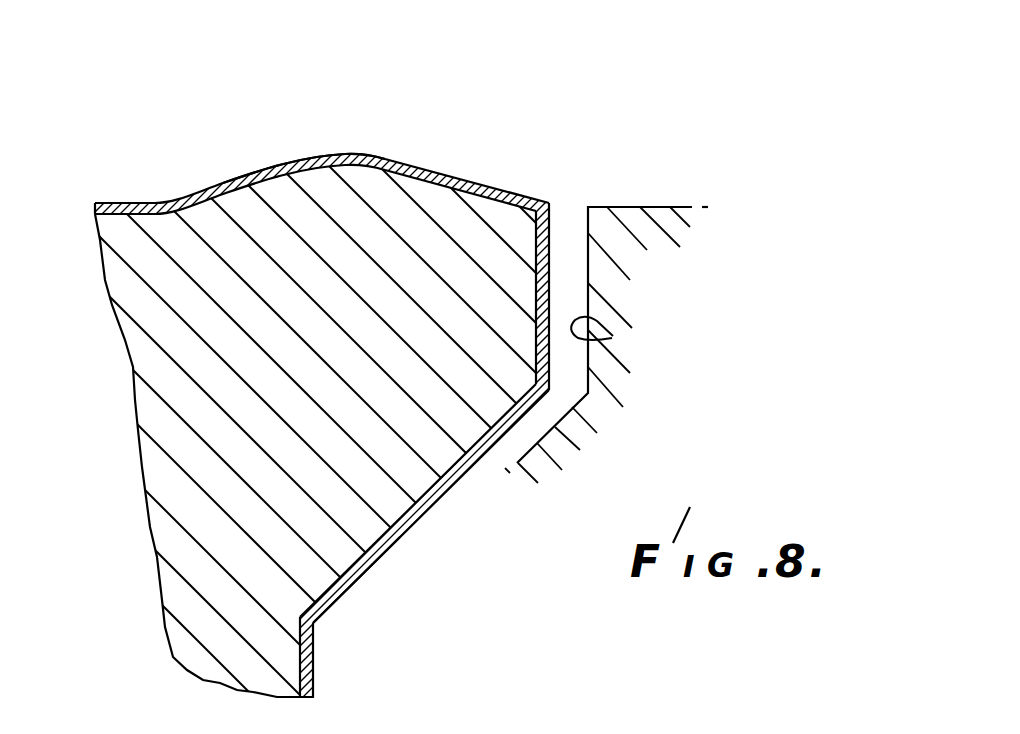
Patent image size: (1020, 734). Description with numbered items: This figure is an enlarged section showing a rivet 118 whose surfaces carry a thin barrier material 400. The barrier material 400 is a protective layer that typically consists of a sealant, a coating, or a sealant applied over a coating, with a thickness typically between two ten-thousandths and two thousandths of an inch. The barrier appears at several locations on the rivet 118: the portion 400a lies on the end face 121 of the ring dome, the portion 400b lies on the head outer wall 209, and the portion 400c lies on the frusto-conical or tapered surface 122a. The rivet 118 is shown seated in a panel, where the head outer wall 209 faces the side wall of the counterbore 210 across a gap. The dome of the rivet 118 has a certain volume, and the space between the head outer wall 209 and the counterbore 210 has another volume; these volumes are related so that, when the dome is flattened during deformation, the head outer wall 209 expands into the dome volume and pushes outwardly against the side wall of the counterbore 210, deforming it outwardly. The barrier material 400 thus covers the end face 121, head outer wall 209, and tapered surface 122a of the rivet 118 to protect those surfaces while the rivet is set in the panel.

The rivet 118 is at (186, 258).
The end face 121 is at (343, 155).
The frusto-conical or tapered surface 122a is at (378, 560).
The barrier material 400 is at (500, 177).
The barrier material on end face 400a is at (393, 160).
The barrier material on head outer wall 400b is at (549, 250).
The barrier material on tapered surface 400c is at (452, 488).
The head outer wall 209 is at (540, 285).
The counterbore 210 is at (612, 338).